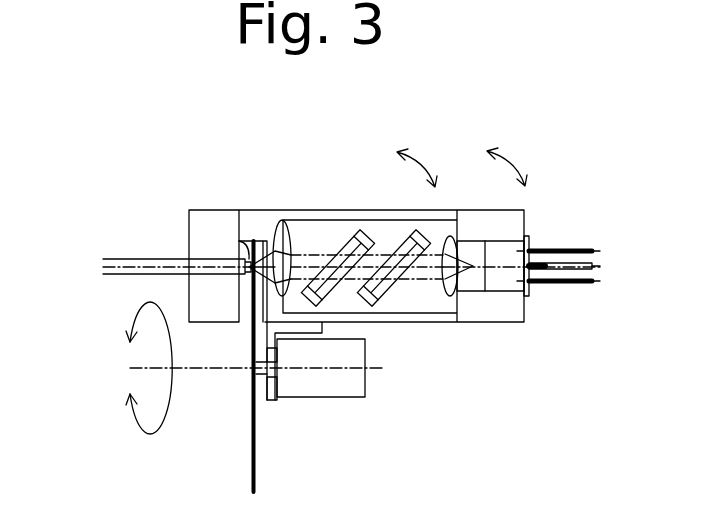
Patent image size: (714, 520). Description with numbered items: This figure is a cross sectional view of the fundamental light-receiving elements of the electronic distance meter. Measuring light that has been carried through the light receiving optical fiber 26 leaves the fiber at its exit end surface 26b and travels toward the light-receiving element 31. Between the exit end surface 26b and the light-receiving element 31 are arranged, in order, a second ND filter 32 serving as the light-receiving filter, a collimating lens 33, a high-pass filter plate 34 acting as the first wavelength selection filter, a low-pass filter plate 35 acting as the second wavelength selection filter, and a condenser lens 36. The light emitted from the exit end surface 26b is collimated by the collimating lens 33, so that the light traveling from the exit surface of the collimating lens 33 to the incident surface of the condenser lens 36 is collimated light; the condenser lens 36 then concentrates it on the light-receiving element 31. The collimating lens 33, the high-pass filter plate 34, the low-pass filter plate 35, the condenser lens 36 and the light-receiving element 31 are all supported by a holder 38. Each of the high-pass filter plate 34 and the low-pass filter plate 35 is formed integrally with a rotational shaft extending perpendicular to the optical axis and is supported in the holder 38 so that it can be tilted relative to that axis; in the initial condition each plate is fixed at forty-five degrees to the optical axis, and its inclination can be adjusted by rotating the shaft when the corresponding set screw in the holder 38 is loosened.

The light receiving optical fiber 26 is at (122, 259).
The exit end surface 26b is at (241, 240).
The light-receiving element 31 is at (503, 283).
The second ND filter 32 is at (255, 461).
The collimating lens 33 is at (283, 221).
The high-pass filter plate 34 is at (369, 236).
The low-pass filter plate 35 is at (390, 297).
The condenser lens 36 is at (457, 240).
The holder 38 is at (498, 220).